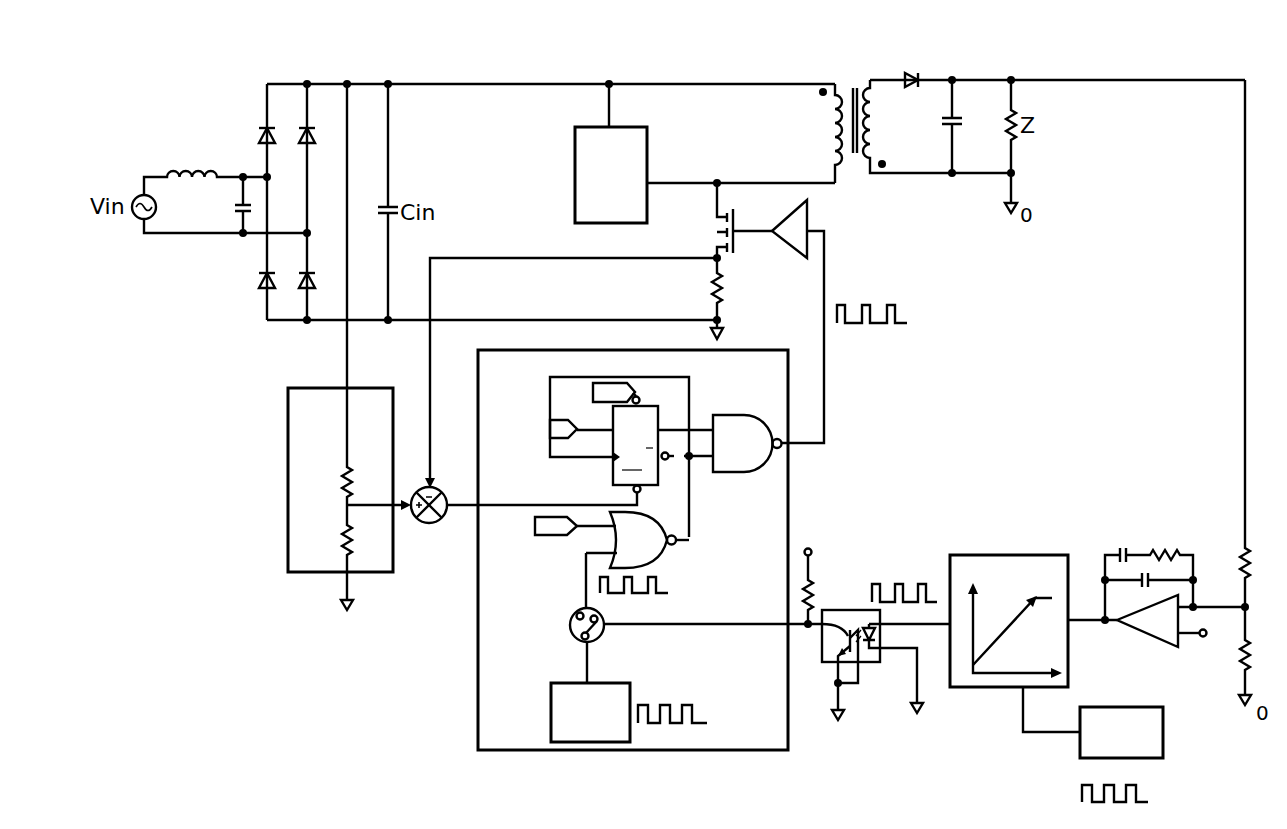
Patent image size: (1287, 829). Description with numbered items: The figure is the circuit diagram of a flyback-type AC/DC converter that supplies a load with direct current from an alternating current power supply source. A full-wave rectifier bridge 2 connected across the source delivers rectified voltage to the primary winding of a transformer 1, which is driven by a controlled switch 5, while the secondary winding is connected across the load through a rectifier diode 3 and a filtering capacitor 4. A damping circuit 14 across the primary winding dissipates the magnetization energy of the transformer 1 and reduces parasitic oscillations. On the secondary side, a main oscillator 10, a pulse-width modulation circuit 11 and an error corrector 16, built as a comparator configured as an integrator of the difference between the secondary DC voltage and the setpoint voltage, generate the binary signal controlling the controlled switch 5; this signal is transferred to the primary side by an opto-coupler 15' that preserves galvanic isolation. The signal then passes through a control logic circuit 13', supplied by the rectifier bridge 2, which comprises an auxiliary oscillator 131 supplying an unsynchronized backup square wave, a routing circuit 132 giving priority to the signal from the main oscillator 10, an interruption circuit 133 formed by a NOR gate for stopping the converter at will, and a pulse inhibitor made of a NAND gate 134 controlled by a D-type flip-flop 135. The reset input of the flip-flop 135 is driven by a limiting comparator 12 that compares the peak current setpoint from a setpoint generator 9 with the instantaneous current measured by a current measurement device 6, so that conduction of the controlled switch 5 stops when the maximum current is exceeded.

The transformer 1 is at (856, 68).
The full-wave rectifier bridge 2 is at (303, 148).
The rectifier diode 3 is at (913, 73).
The filtering capacitor 4 is at (958, 121).
The controlled switch 5 is at (740, 224).
The current measurement device 6 is at (724, 290).
The primary peak current maximum setpoint generator 9 is at (288, 505).
The main oscillator 10 is at (1163, 735).
The pulse-width modulation circuit 11 is at (968, 555).
The limiting comparator 12 is at (437, 523).
The control logic circuit 13' is at (837, 584).
The damping circuit 14 is at (575, 172).
The opto-coupler 15' is at (873, 635).
The error corrector 16 is at (1145, 642).
The auxiliary oscillator 131 is at (613, 683).
The routing circuit 132 is at (570, 628).
The interruption circuit 133 is at (684, 547).
The NAND gate 134 is at (737, 415).
The D-type flip-flop 135 is at (608, 470).